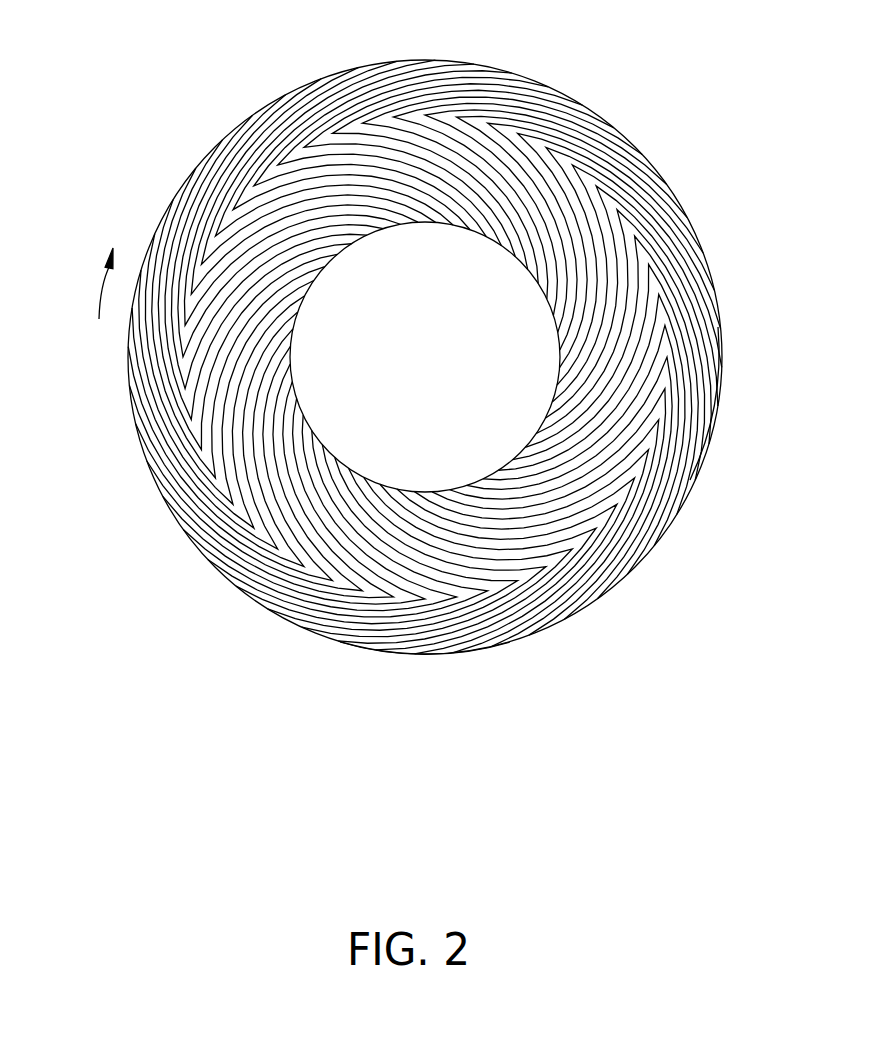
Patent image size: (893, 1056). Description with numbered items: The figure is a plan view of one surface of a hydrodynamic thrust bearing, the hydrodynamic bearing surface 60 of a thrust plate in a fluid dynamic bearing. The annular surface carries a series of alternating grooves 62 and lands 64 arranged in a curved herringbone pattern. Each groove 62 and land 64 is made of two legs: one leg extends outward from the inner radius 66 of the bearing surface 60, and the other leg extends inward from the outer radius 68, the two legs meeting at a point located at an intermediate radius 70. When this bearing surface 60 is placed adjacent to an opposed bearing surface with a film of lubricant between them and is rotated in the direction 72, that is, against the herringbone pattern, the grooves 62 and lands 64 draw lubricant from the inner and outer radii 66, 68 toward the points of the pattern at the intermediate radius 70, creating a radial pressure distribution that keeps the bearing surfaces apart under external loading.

The hydrodynamic bearing surface 60 is at (444, 358).
The grooves 62 is at (722, 320).
The lands 64 is at (708, 435).
The inner radius 66 is at (350, 472).
The outer radius 68 is at (440, 657).
The intermediate radius 70 is at (630, 487).
The direction of rotation 72 is at (106, 280).